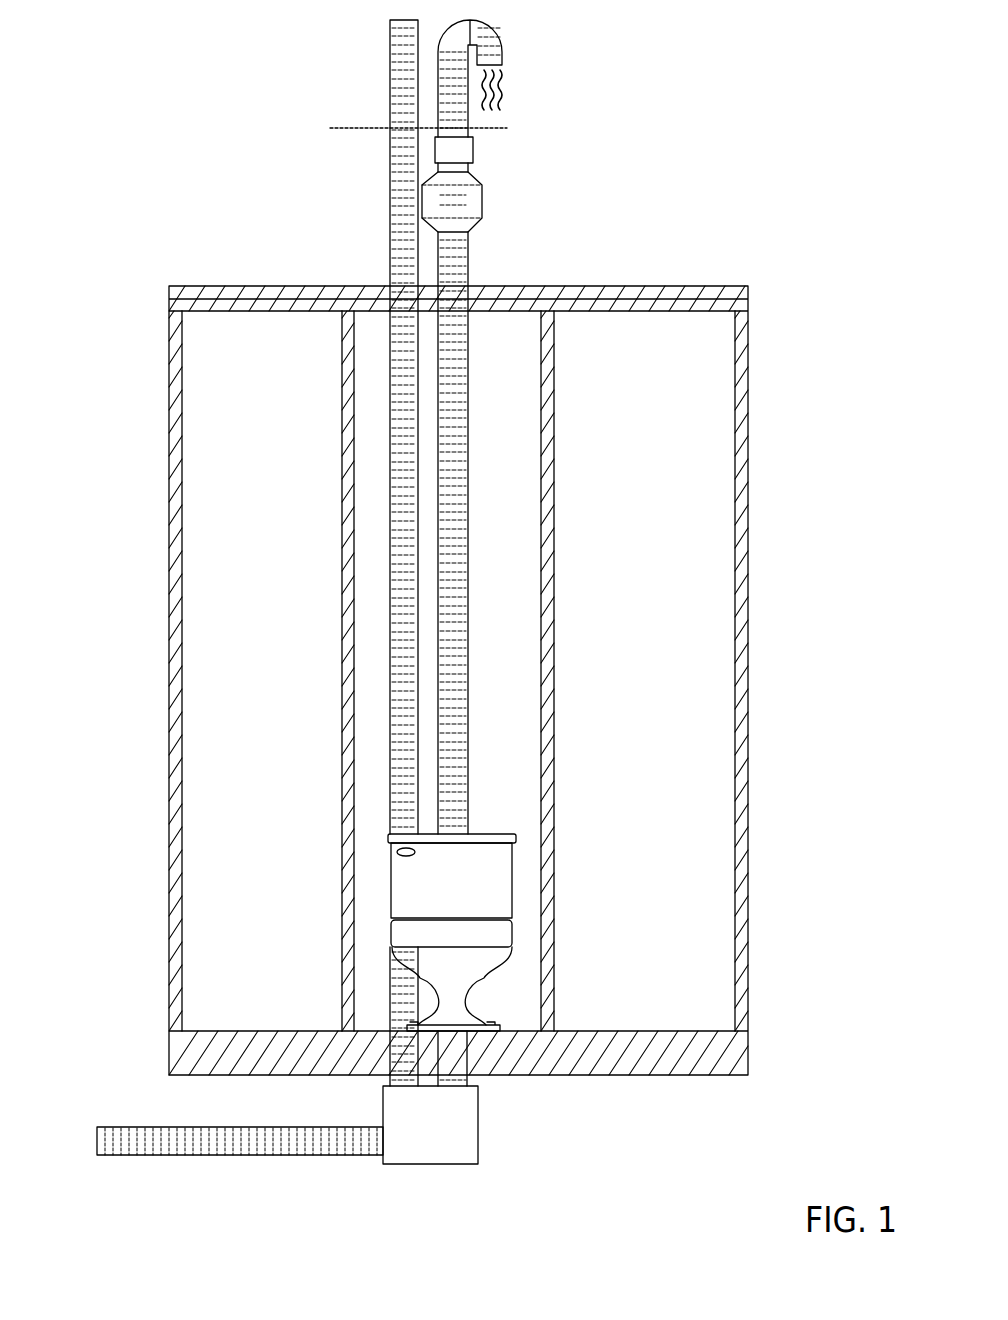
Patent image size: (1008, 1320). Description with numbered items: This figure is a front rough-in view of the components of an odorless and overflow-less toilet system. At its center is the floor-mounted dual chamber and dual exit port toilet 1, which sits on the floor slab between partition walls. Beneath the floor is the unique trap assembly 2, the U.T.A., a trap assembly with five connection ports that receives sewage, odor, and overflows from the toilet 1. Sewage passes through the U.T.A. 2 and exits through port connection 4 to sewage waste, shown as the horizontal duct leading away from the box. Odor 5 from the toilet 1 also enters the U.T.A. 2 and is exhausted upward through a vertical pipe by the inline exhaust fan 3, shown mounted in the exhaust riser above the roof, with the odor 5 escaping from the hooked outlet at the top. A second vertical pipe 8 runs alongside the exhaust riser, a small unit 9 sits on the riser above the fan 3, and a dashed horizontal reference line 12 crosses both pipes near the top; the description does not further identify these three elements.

The dual chamber and dual exit port toilet 1 is at (502, 960).
The unique trap assembly 2 is at (489, 1158).
The inline exhaust fan 3 is at (508, 204).
The port connection 4 is at (82, 1151).
The odor 5 is at (526, 99).
The air supply pipe 8 is at (372, 38).
The fan / extractor 9 is at (494, 154).
The roof level line 12 is at (309, 134).